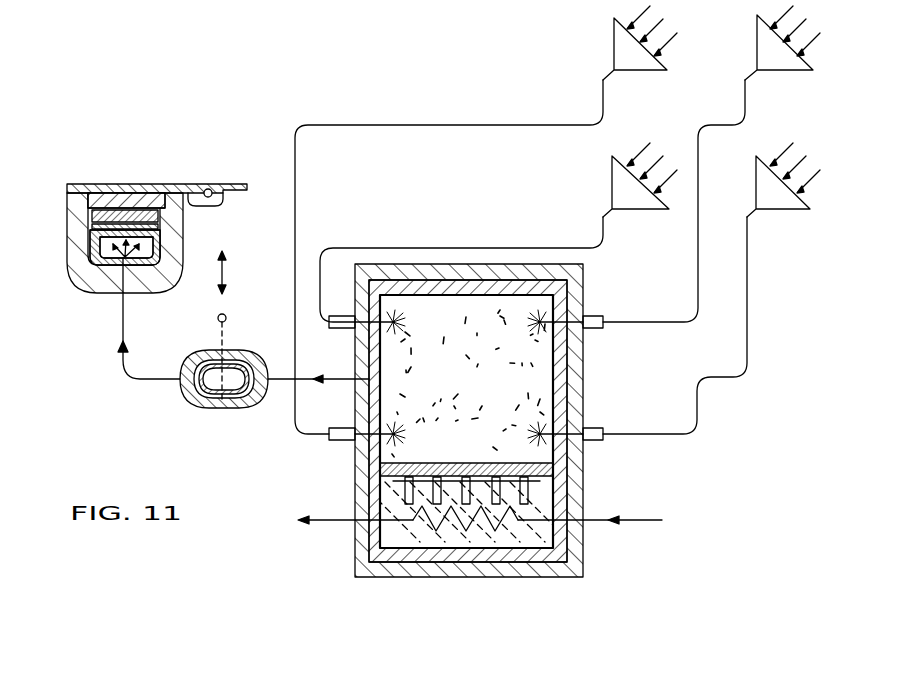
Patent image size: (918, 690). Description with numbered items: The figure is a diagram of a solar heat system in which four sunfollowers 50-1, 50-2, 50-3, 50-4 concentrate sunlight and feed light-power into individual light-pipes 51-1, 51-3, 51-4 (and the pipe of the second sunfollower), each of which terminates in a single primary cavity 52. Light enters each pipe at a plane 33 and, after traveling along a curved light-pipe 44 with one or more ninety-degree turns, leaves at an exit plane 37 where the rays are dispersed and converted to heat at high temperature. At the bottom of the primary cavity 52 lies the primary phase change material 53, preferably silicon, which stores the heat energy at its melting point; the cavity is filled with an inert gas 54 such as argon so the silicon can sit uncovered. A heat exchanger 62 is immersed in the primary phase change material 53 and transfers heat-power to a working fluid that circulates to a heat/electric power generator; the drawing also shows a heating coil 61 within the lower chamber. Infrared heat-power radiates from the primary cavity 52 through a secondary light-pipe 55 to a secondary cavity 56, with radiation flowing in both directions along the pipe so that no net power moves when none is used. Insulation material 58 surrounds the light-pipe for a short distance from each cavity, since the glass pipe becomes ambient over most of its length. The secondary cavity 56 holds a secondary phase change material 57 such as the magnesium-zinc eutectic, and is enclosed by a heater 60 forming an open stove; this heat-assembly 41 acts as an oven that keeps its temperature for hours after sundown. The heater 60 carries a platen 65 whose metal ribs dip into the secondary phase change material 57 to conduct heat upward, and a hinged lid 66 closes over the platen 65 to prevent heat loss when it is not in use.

The plane 33 is at (543, 428).
The exit plane 37 is at (125, 256).
The heat-assembly 41 is at (173, 223).
The curved light-pipe 44 is at (140, 379).
The sunfollower 50-1 is at (620, 58).
The sunfollower 50-2 is at (765, 55).
The sunfollower 50-3 is at (635, 201).
The sunfollower 50-4 is at (778, 203).
The light-pipe 51-1 is at (607, 97).
The light-pipe 51-3 is at (600, 218).
The light-pipe 51-4 is at (751, 248).
The primary cavity 52 is at (437, 389).
The primary phase change material 53 is at (513, 538).
The inert gas 54 is at (523, 366).
The secondary light-pipe 55 is at (275, 383).
The secondary cavity 56 is at (147, 256).
The secondary phase change material 57 is at (95, 221).
The insulation material 58 is at (90, 280).
The heater 60 is at (182, 247).
The heating coil 61 is at (425, 531).
The heat exchanger 62 is at (495, 497).
The platen 65 is at (147, 199).
The hinged lid 66 is at (132, 188).